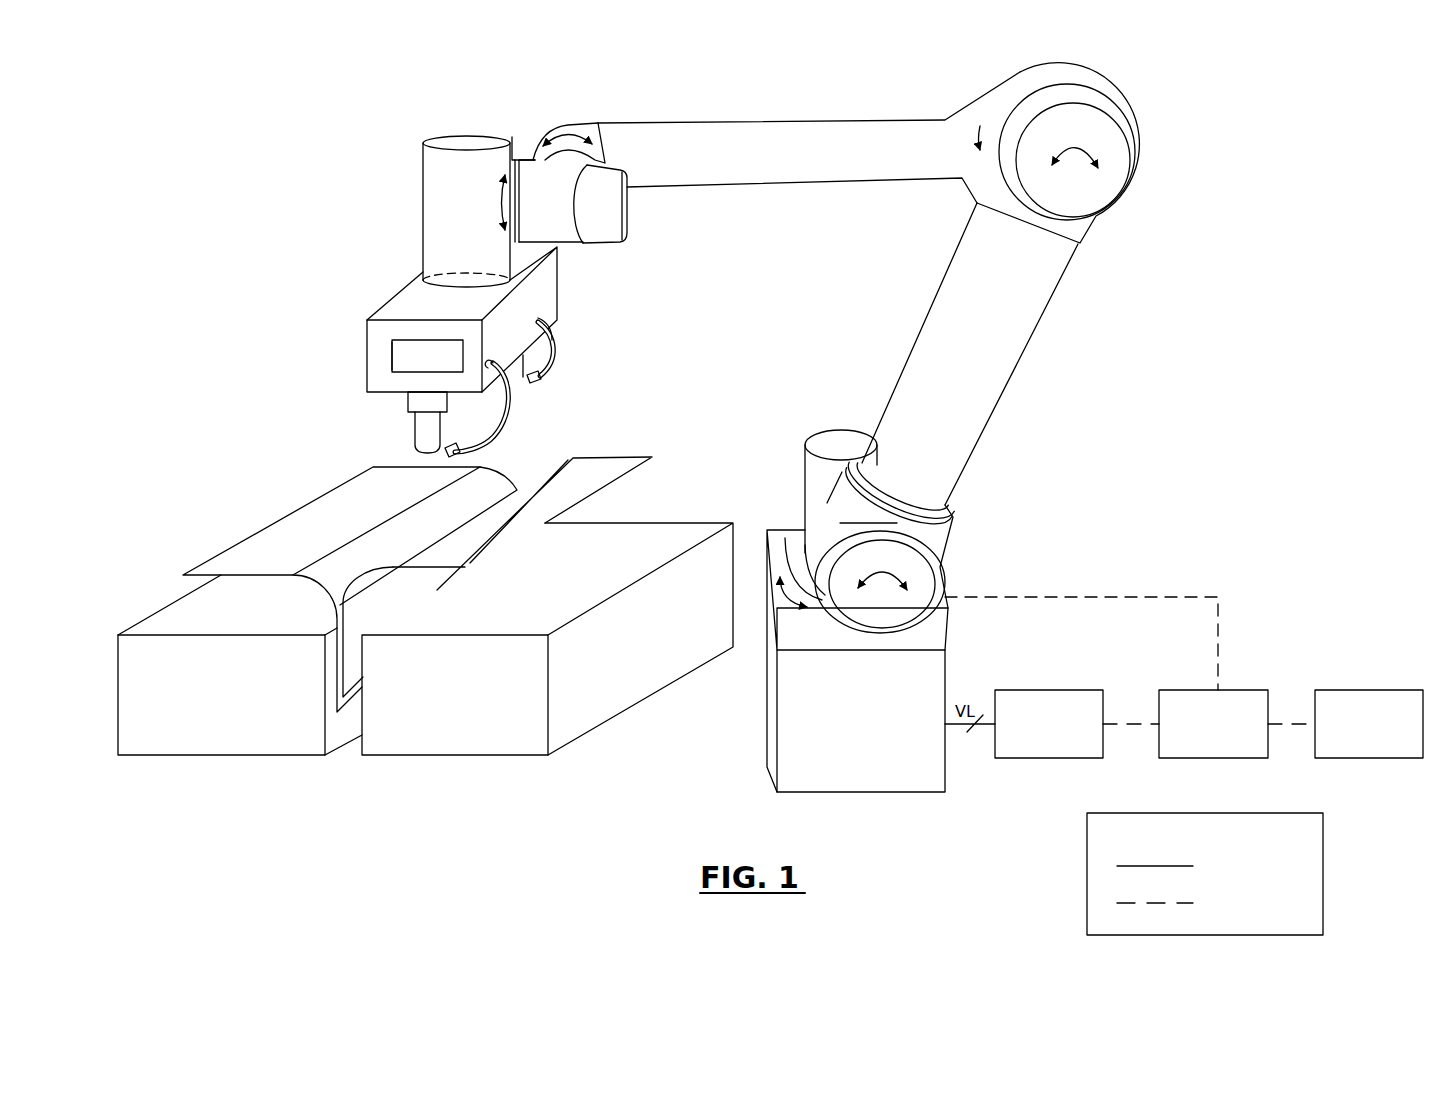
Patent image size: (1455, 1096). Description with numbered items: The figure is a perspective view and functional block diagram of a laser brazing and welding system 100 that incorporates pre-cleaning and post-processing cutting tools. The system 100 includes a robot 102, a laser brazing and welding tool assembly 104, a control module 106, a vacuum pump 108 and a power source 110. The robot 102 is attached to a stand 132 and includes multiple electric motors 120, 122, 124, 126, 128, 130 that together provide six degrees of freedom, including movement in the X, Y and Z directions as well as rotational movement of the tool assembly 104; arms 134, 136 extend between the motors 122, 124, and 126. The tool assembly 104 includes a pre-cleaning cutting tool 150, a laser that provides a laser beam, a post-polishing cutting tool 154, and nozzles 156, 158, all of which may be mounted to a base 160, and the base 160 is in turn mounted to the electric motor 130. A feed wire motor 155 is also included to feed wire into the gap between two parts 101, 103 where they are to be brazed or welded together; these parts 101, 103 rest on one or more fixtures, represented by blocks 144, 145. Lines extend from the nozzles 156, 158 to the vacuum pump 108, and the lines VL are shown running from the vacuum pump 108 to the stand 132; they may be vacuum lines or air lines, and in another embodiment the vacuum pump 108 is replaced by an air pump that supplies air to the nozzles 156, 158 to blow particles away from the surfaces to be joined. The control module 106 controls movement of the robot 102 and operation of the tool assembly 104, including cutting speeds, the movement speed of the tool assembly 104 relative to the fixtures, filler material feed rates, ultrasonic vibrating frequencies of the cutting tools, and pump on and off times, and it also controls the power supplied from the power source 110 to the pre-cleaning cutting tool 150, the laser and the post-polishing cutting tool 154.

The laser brazing and welding system 100 is at (248, 62).
The part 101 is at (272, 546).
The robot 102 is at (1115, 103).
The part 103 is at (612, 470).
The laser brazing and welding tool assembly 104 is at (366, 284).
The control module 106 is at (1250, 690).
The vacuum pump 108 is at (1073, 690).
The power source 110 is at (1403, 690).
The electric motor 120 is at (842, 432).
The electric motor 122 is at (943, 565).
The electric motor 124 is at (1135, 182).
The electric motor 126 is at (552, 132).
The electric motor 128 is at (630, 203).
The electric motor 130 is at (423, 145).
The stand 132 is at (770, 723).
The arm 134 is at (1000, 360).
The arm 136 is at (788, 138).
The block 144 is at (170, 615).
The block 145 is at (483, 738).
The pre-cleaning cutting tool 150 is at (410, 412).
The post-polishing cutting tool 154 is at (521, 363).
The feed wire motor 155 is at (393, 357).
The nozzle 156 is at (464, 457).
The nozzle 158 is at (532, 378).
The base 160 is at (375, 343).